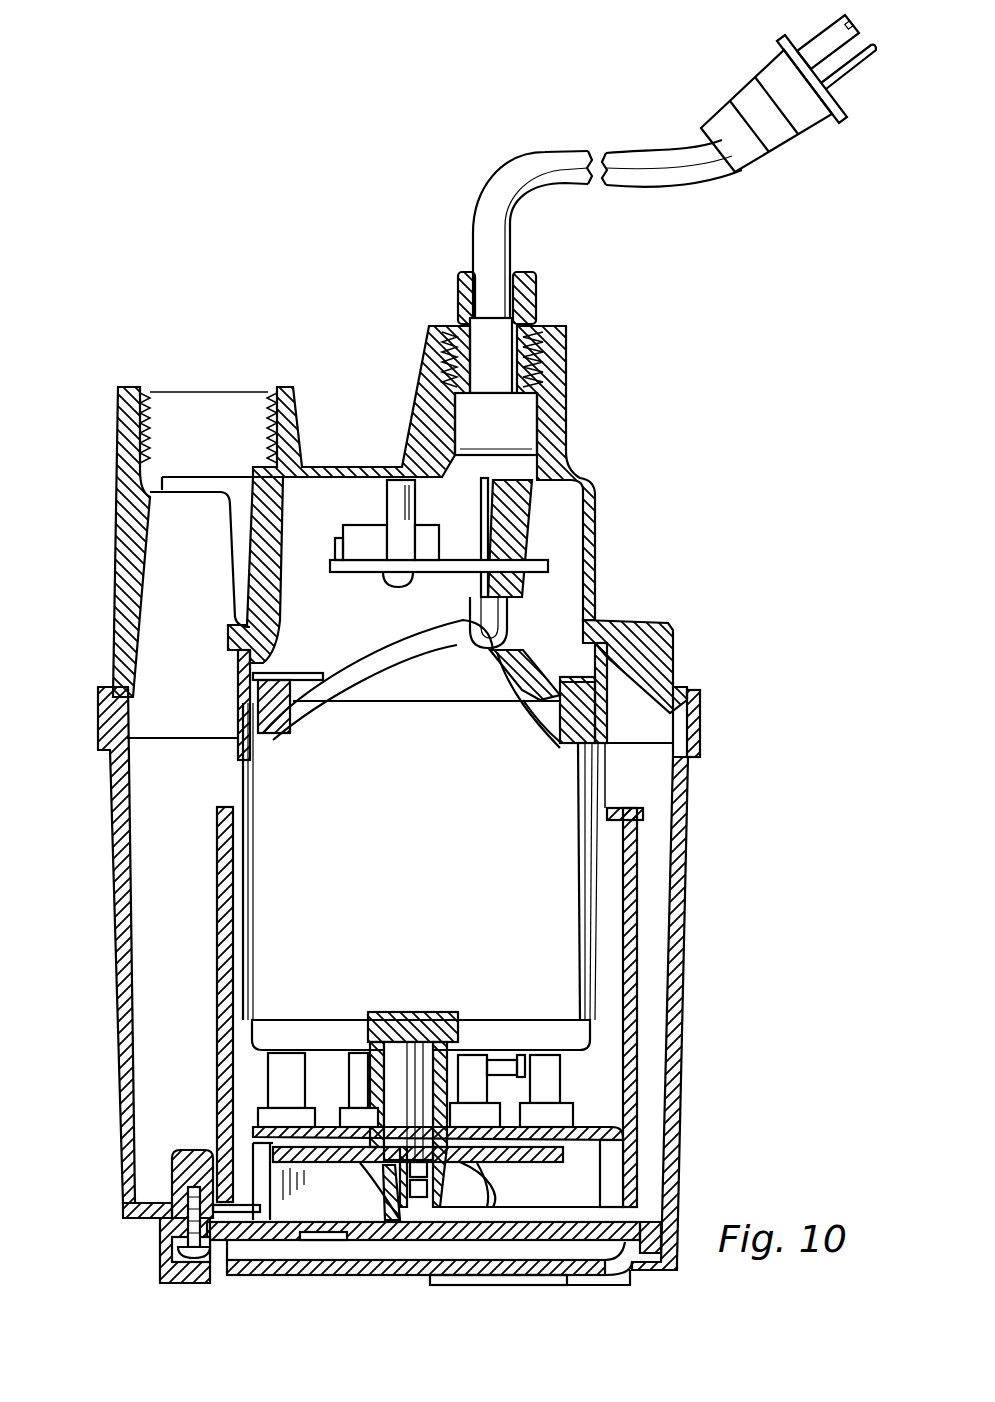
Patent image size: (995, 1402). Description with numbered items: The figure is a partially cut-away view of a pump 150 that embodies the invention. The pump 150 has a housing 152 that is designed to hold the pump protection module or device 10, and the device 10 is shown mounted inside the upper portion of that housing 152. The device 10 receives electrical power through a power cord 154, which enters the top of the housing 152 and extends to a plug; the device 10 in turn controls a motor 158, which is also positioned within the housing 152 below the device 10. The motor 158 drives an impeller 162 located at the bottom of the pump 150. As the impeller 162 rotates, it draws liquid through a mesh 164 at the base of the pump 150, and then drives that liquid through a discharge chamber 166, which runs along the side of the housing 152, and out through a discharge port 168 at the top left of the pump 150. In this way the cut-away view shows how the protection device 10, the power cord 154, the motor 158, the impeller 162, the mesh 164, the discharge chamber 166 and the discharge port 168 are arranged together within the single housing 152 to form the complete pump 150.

The pump protection module 10 is at (452, 565).
The pump 150 is at (458, 681).
The housing 152 is at (400, 516).
The power cord 154 is at (573, 168).
The motor 158 is at (590, 868).
The impeller 162 is at (467, 1200).
The mesh 164 is at (545, 1288).
The discharge chamber 166 is at (142, 908).
The discharge port 168 is at (213, 412).